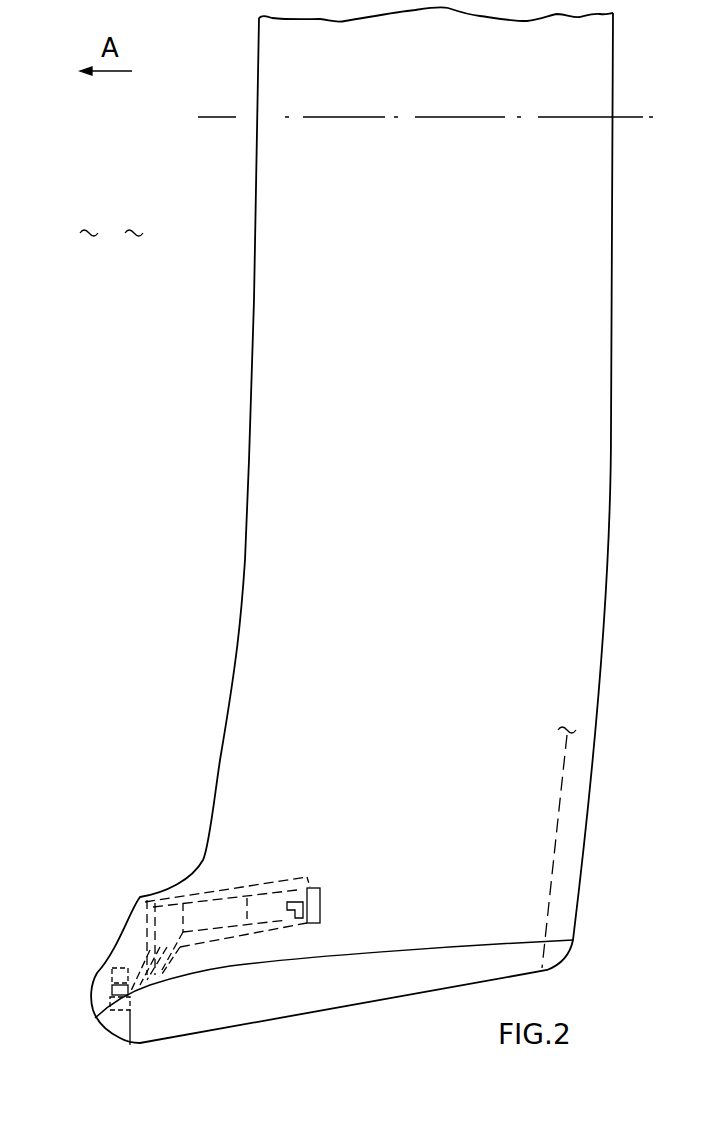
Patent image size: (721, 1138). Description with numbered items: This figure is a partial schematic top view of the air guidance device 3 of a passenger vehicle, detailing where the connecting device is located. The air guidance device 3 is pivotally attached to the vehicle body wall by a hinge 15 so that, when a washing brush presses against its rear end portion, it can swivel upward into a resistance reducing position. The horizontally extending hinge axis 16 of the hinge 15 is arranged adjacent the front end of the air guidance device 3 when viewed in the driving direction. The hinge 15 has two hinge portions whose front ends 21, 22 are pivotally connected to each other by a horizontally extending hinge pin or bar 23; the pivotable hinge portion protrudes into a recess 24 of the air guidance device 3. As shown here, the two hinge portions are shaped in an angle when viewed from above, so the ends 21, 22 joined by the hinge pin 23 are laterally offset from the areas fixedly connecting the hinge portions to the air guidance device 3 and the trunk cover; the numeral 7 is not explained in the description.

The air guidance device 3 is at (612, 433).
The boot 7 is at (111, 234).
The hinge 15 is at (110, 975).
The hinge axis 16 is at (112, 985).
The end of hinge portion 21 is at (128, 972).
The end of hinge portion 22 is at (130, 1040).
The hinge pin or bar 23 is at (112, 1000).
The recess 24 is at (270, 882).